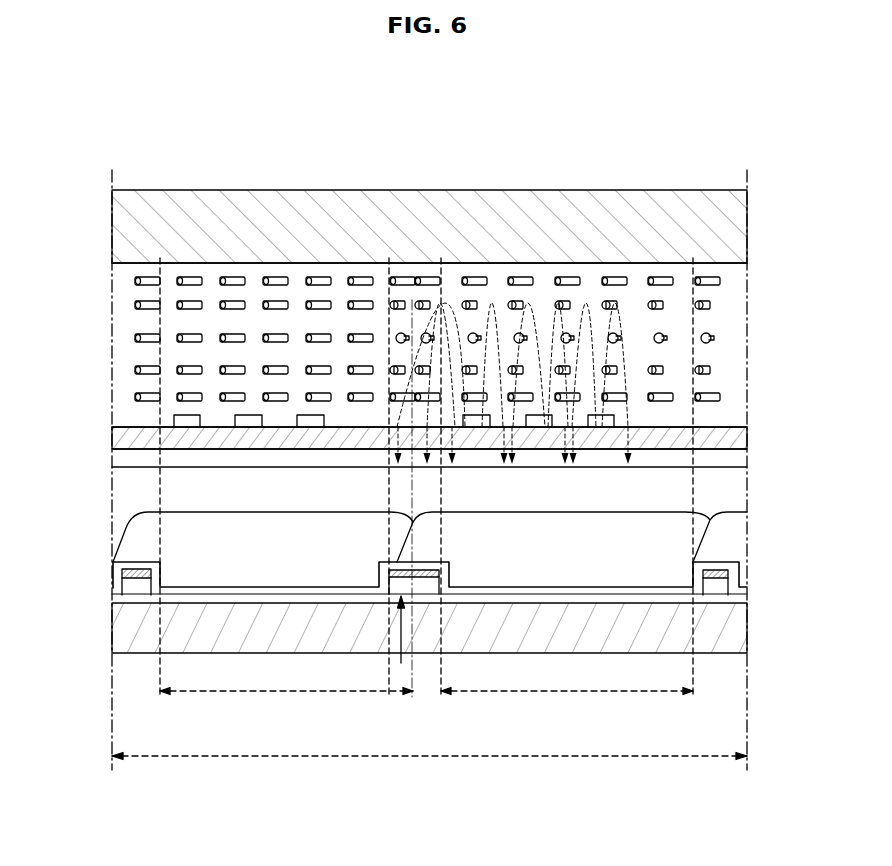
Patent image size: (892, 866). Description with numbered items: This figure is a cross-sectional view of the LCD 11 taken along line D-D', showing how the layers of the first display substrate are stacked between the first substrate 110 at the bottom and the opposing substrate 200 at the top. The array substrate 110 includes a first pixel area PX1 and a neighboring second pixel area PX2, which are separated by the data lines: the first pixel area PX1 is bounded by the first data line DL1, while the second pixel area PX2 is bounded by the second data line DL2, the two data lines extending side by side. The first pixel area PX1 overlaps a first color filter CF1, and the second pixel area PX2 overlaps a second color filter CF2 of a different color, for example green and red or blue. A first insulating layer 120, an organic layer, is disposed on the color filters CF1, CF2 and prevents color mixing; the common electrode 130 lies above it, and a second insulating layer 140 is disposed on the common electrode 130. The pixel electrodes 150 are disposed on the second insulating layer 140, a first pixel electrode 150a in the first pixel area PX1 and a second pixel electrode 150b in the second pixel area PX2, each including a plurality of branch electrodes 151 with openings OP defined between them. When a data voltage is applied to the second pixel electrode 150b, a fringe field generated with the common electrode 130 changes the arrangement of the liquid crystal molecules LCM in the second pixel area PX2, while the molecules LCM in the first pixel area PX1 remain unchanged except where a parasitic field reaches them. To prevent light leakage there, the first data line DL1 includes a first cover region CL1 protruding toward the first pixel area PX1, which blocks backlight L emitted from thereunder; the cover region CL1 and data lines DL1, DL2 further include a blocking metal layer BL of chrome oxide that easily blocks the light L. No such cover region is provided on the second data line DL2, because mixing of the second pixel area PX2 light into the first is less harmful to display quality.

The LCD 11 is at (414, 176).
The upper substrate 200 is at (122, 228).
The pixel electrode 150 is at (428, 552).
The first pixel electrode 150a is at (63, 393).
The second pixel electrode 150b is at (795, 370).
The liquid crystal molecules LCM is at (428, 365).
The opening OP is at (243, 417).
The branch electrode 151 is at (207, 419).
The second insulating layer 140 is at (116, 440).
The common electrode 130 is at (118, 458).
The first insulating layer 120 is at (125, 492).
The first color filter CF1 is at (138, 540).
The second color filter CF2 is at (662, 522).
The blocking metal layer BL is at (716, 573).
The first cover region CL1 is at (397, 583).
The first data line DL1 is at (432, 587).
The second data line DL2 is at (717, 588).
The first substrate 110 is at (124, 634).
The first pixel area PX1 is at (286, 495).
The second pixel area PX2 is at (567, 495).
The backlight L is at (415, 477).
The line D-D' is at (429, 769).